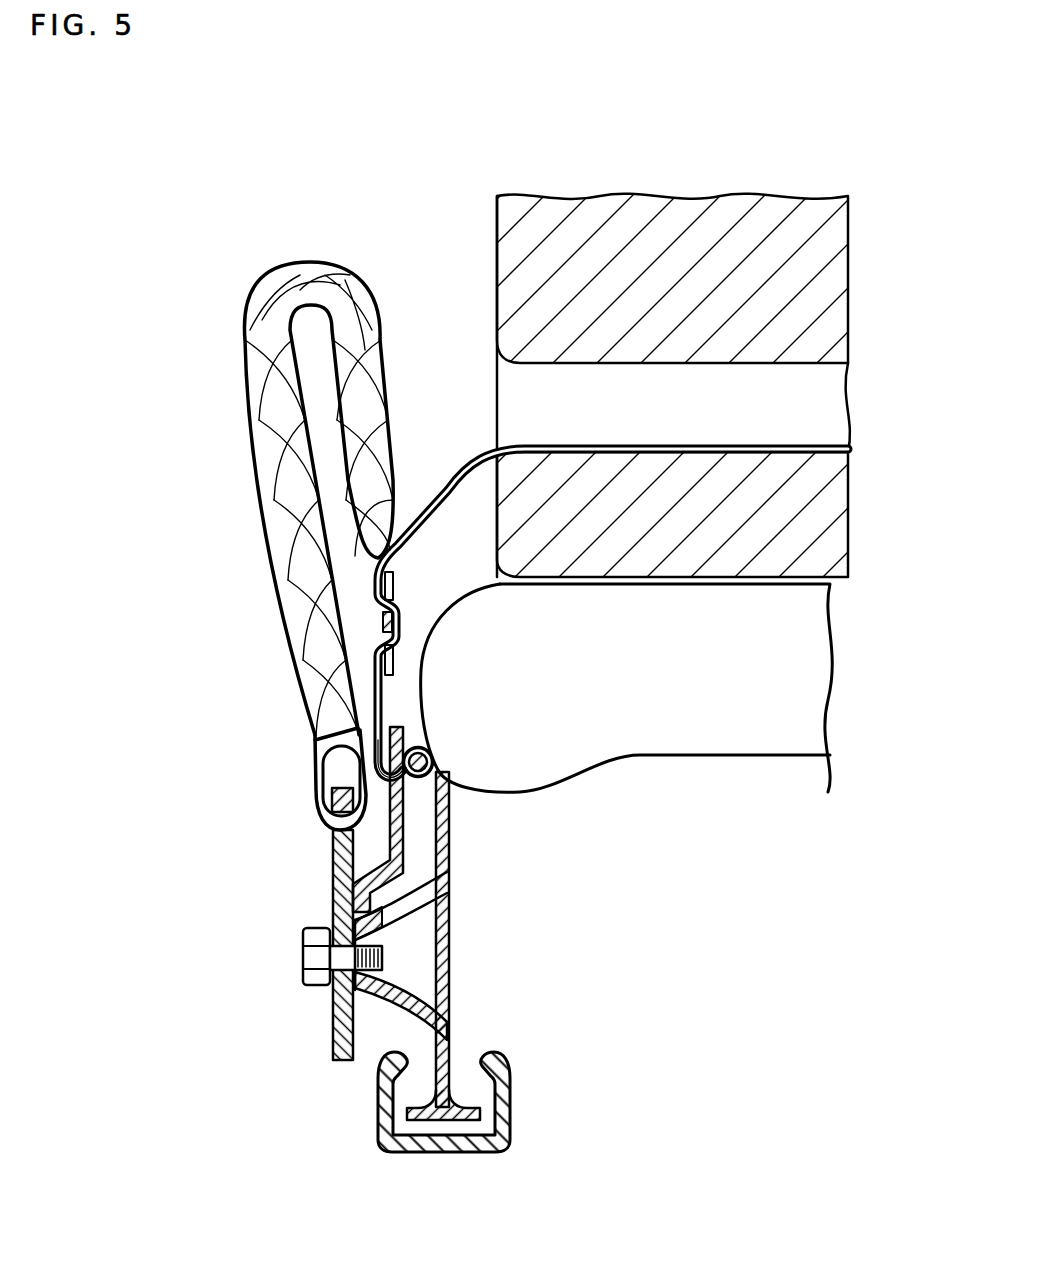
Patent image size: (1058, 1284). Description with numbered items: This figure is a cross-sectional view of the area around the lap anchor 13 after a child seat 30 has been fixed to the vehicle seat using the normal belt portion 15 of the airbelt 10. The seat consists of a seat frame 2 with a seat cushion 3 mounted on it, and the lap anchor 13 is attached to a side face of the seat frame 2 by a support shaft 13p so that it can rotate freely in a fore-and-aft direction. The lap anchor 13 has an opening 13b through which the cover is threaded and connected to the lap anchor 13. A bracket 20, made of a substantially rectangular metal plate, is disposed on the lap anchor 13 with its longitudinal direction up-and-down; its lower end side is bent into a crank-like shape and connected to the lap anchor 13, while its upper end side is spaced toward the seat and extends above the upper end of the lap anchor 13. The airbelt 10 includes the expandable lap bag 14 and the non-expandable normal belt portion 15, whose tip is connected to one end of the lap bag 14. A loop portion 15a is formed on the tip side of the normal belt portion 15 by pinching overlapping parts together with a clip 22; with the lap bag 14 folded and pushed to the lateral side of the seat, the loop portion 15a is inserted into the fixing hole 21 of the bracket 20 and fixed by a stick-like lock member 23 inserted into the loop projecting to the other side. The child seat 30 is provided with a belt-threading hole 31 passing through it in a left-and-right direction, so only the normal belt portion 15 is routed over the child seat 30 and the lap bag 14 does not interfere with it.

The seat frame 2 is at (450, 935).
The seat cushion 3 is at (762, 728).
The airbelt 10 is at (216, 393).
The lap anchor 13 is at (333, 905).
The opening 13b is at (322, 822).
The support shaft 13p is at (306, 975).
The lap bag 14 is at (268, 296).
The normal belt portion 15 is at (835, 450).
The loop portion 15a is at (422, 745).
The bracket 20 is at (448, 877).
The fixing hole 21 is at (405, 800).
The clip 22 is at (400, 656).
The lock member 23 is at (437, 766).
The child seat 30 is at (497, 230).
The belt-threading hole 31 is at (510, 400).